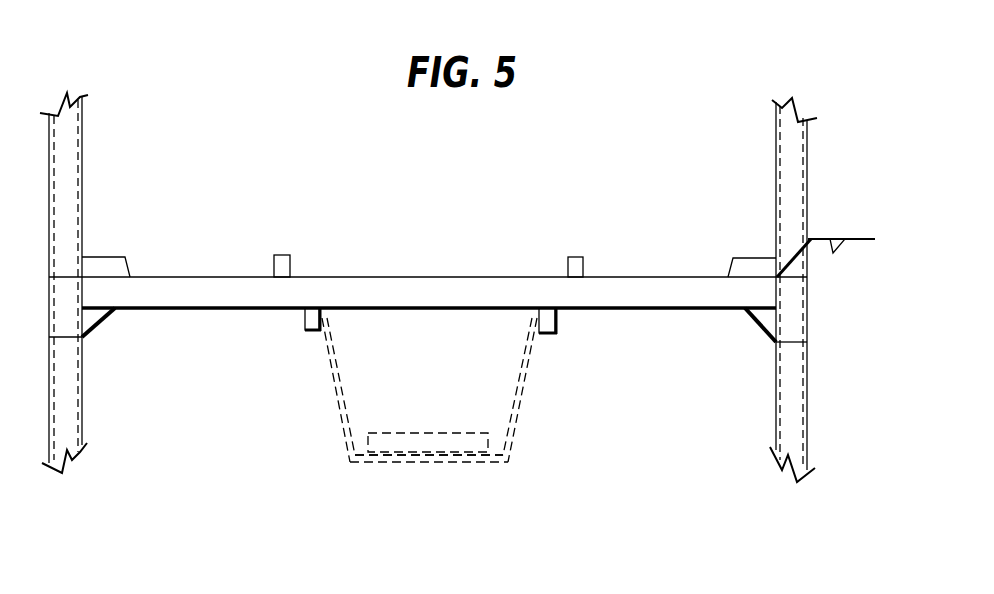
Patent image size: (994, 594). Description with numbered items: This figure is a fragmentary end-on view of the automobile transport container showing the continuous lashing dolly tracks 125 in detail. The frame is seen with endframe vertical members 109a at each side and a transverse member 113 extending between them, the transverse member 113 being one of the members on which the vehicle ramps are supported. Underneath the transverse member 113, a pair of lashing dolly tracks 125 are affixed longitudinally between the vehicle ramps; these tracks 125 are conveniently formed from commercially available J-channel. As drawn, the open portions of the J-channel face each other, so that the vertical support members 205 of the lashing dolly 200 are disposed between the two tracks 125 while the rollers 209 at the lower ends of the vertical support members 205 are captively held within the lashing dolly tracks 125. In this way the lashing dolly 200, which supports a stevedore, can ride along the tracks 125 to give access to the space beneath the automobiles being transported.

The endframe vertical member 109a is at (793, 192).
The transverse member 113 is at (758, 293).
The lashing dolly track 125 is at (302, 318).
The roller 209 is at (326, 317).
The vertical portion of support member 205 is at (522, 405).
The lashing dolly 200 is at (471, 478).